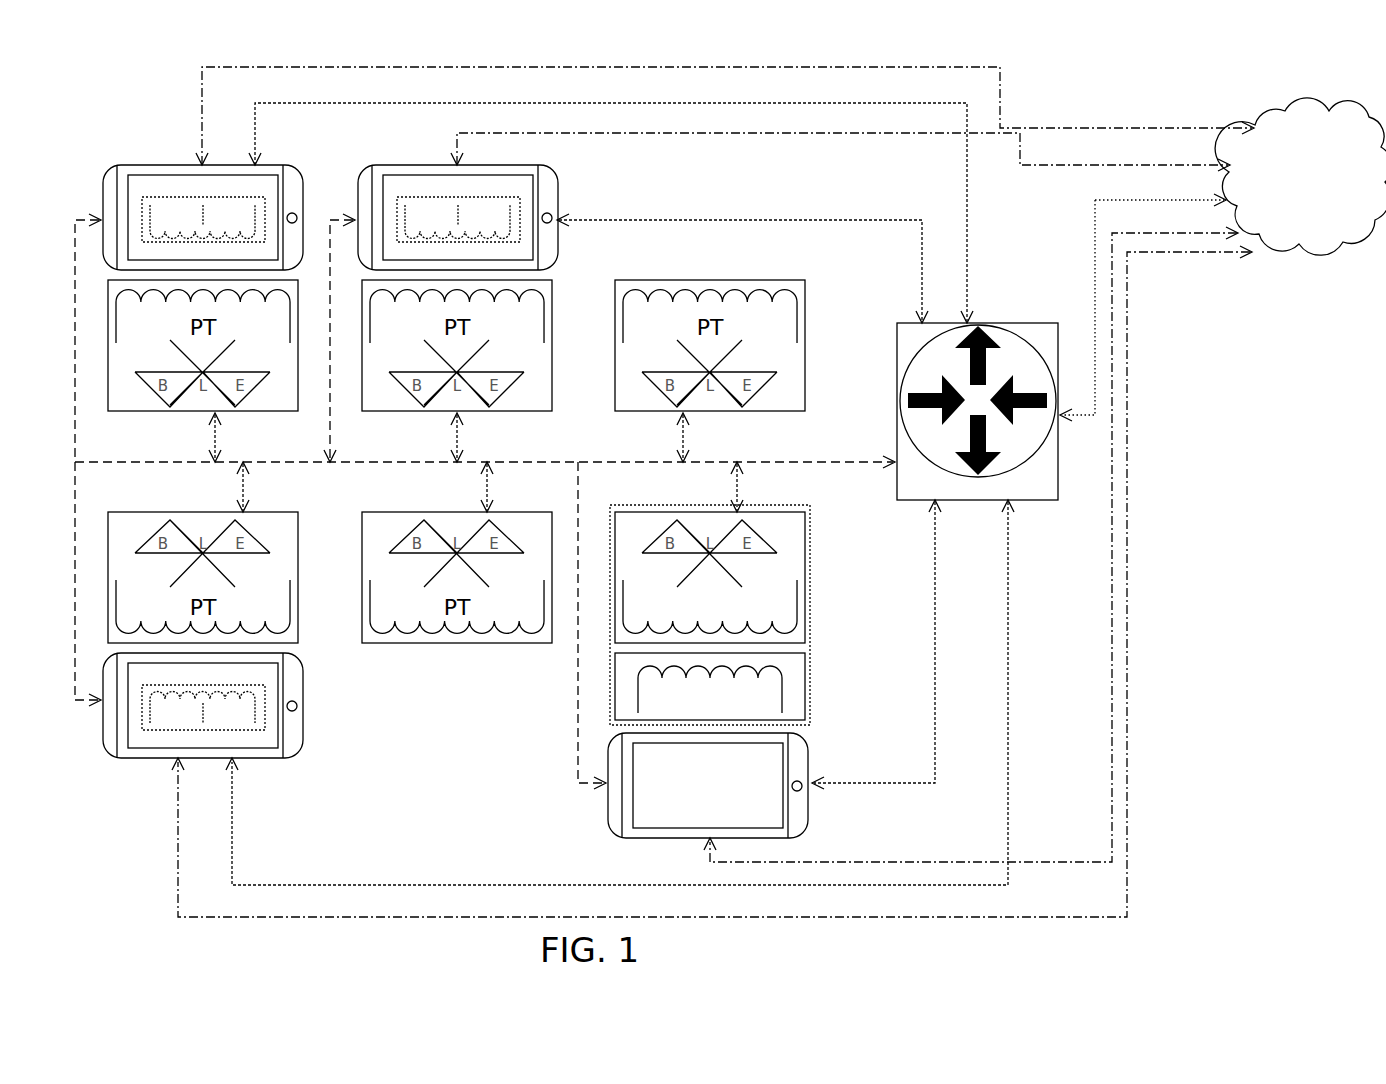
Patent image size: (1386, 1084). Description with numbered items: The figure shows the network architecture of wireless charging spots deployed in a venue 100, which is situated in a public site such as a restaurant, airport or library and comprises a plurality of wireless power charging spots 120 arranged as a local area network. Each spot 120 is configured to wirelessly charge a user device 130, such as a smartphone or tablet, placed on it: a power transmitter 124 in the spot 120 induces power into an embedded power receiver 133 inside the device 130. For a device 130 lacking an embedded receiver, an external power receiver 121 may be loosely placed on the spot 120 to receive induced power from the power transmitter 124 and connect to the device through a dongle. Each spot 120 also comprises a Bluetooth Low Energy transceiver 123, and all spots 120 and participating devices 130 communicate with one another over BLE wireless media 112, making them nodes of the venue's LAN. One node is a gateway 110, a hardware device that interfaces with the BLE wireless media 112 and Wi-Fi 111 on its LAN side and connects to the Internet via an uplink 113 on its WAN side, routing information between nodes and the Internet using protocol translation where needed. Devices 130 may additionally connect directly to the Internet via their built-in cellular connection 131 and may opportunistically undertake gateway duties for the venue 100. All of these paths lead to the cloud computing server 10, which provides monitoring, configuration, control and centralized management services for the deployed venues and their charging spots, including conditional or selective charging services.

The venue 100 is at (1087, 107).
The cloud computing server 10 is at (1300, 264).
The gateway 110 is at (1000, 323).
The Wi-Fi 111 is at (922, 270).
The BLE wireless media 112 is at (75, 220).
The uplink 113 is at (1095, 234).
The wireless power charging spot 120 is at (491, 479).
The external power receiver 121 is at (810, 705).
The Bluetooth Low Energy transceiver 123 is at (766, 552).
The power transmitter 124 is at (757, 606).
The user device 130 is at (489, 472).
The 3G 131 is at (700, 134).
The embedded power receiver 133 is at (266, 200).